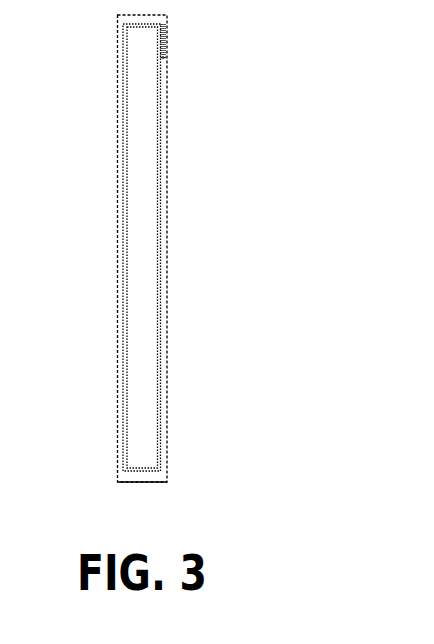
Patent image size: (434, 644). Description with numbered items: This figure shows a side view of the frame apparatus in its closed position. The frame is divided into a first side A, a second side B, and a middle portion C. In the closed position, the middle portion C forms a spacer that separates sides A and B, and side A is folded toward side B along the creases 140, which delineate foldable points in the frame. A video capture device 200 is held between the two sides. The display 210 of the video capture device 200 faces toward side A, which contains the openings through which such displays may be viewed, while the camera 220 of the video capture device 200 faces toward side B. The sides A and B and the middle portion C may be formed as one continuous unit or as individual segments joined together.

The video capture device 200 is at (152, 214).
The display 210 is at (122, 142).
The camera 220 is at (168, 40).
The creases 140 is at (118, 485).
The first side A is at (112, 295).
The second side B is at (166, 361).
The middle portion C is at (142, 483).